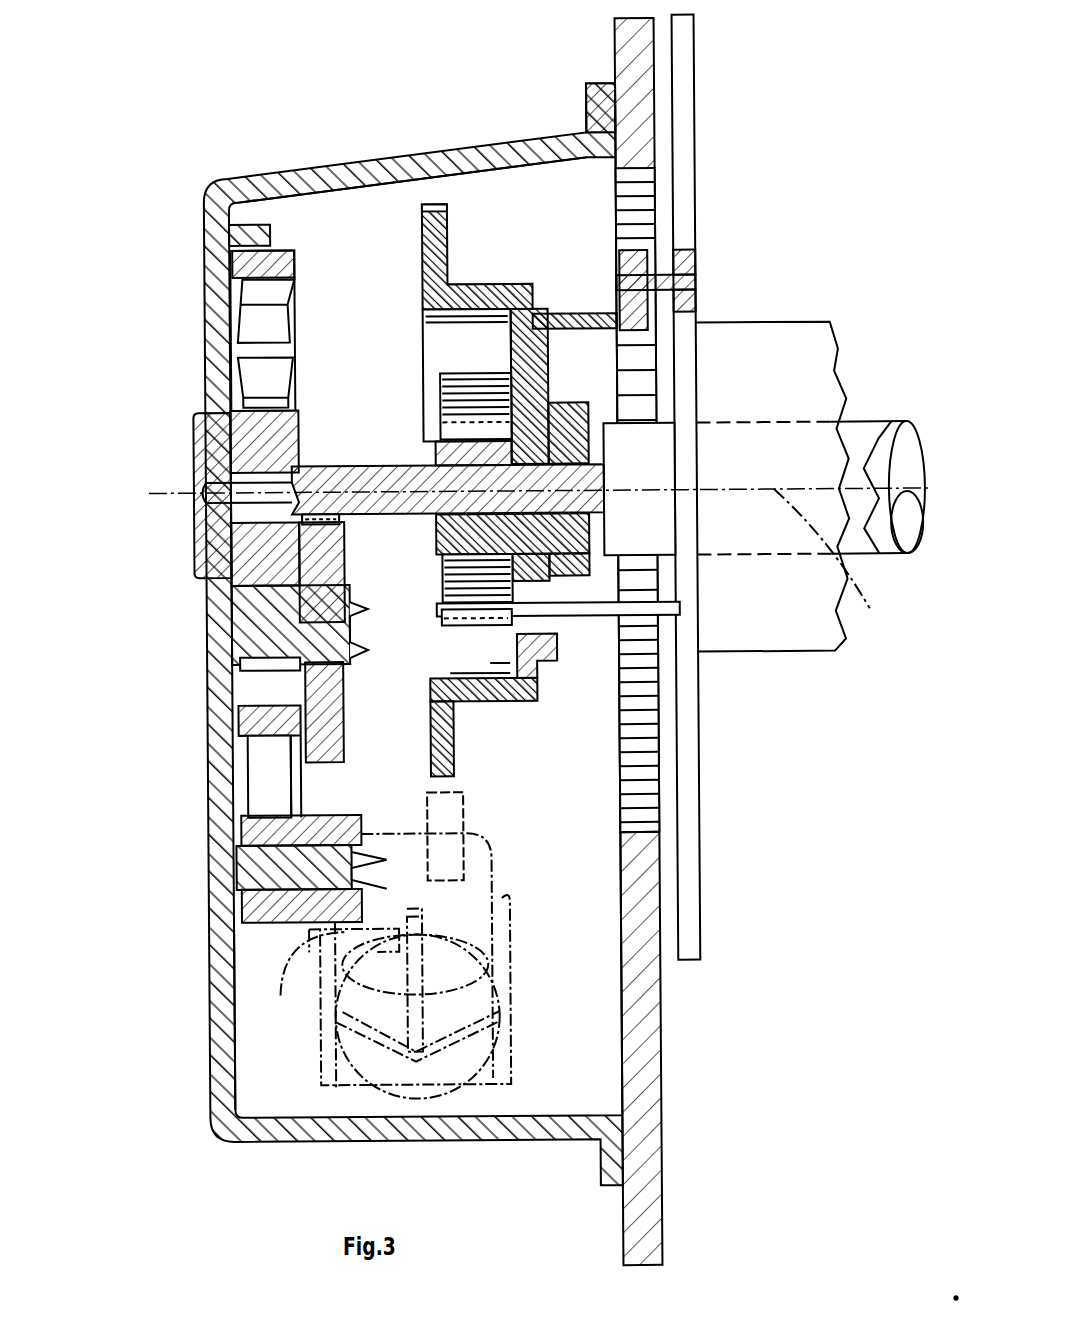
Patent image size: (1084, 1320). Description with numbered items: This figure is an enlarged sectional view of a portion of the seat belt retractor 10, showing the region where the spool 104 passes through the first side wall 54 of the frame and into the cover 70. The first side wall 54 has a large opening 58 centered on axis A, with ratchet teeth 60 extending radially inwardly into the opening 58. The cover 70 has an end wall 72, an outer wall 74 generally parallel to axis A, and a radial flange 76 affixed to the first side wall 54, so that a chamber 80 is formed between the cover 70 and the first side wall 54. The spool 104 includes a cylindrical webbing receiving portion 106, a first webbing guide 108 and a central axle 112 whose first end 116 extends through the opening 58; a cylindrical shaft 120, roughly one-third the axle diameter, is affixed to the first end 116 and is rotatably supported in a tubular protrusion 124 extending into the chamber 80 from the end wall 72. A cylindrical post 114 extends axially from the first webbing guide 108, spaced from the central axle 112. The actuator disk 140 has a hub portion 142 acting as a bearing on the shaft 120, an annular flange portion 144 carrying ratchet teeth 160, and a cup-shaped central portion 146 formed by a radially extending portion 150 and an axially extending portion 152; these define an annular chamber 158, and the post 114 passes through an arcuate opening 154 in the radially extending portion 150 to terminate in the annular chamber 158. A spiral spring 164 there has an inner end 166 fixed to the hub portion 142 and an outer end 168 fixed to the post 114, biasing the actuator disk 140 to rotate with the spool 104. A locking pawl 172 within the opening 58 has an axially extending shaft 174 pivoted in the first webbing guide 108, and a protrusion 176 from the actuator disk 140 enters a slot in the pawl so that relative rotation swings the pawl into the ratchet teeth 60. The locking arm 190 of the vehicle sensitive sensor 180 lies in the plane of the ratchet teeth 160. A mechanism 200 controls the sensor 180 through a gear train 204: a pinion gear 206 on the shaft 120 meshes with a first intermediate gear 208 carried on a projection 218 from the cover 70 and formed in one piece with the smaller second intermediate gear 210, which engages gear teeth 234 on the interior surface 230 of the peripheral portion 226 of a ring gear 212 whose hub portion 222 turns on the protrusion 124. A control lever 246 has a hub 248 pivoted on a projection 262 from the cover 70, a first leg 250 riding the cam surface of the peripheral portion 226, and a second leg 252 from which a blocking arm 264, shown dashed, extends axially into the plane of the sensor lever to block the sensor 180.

The retractor 10 is at (226, 94).
The first side wall 54 is at (664, 641).
The opening 58 is at (632, 832).
The ratchet teeth 60 is at (640, 774).
The cover 70 is at (417, 145).
The end wall 72 is at (222, 990).
The outer wall 74 is at (340, 176).
The radial flange 76 is at (592, 105).
The chamber 80 is at (568, 1033).
The spool 104 is at (810, 437).
The webbing receiving portion 106 is at (810, 335).
The first webbing guide 108 is at (690, 927).
The central axle 112 is at (872, 440).
The cylindrical post 114 is at (592, 625).
The first end 116 is at (640, 427).
The shaft 120 is at (430, 470).
The tubular protrusion 124 is at (250, 473).
The actuator disk 140 is at (500, 280).
The hub portion 142 is at (568, 400).
The flange portion 144 is at (420, 238).
The cup-shaped central portion 146 is at (545, 692).
The radially extending portion 150 is at (470, 340).
The axially extending portion 152 is at (462, 700).
The arcuate opening 154 is at (565, 592).
The annular chamber 158 is at (435, 352).
The ratchet teeth 160 is at (455, 205).
The spiral spring 164 is at (440, 580).
The inner end 166 is at (458, 428).
The outer end 168 is at (460, 620).
The locking pawl 172 is at (645, 265).
The axially extending shaft 174 is at (690, 262).
The protrusion 176 is at (590, 322).
The vehicle sensitive sensor 180 is at (520, 917).
The locking arm 190 is at (430, 802).
The mechanism 200 is at (300, 760).
The gear train 204 is at (312, 425).
The pinion gear 206 is at (365, 514).
The first intermediate gear 208 is at (330, 736).
The second intermediate gear 210 is at (262, 665).
The ring gear 212 is at (265, 719).
The projection 218 is at (270, 641).
The hub portion 222 is at (265, 549).
The peripheral portion 226 is at (252, 265).
The interior surface 230 is at (280, 281).
The gear teeth 234 is at (257, 378).
The control lever 246 is at (262, 794).
The hub 248 is at (262, 909).
The first leg 250 is at (265, 753).
The second leg 252 is at (290, 972).
The projection 262 is at (270, 866).
The blocking arm 264 is at (335, 1012).
The axis A is at (837, 555).